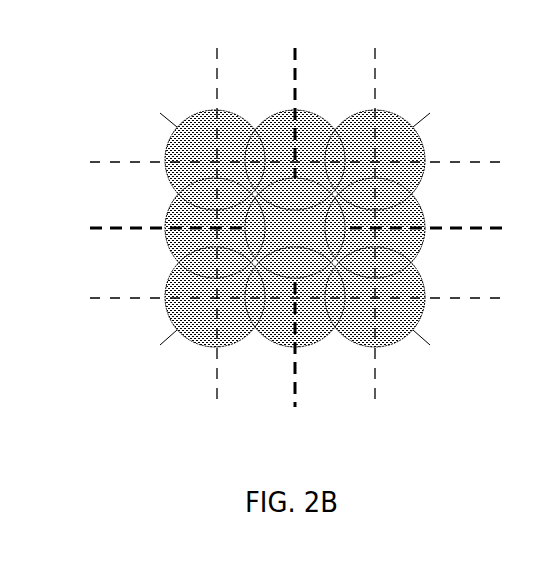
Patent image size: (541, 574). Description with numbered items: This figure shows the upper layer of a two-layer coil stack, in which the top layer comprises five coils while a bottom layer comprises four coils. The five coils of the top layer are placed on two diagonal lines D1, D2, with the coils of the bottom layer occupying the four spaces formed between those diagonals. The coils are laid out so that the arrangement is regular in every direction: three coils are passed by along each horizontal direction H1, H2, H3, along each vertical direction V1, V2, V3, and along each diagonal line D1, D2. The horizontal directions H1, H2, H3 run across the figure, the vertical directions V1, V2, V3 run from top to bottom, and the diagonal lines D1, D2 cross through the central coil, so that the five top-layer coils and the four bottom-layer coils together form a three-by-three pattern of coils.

The horizontal direction H1 is at (271, 161).
The horizontal direction H2 is at (271, 228).
The horizontal direction H3 is at (271, 298).
The vertical direction V1 is at (222, 210).
The vertical direction V2 is at (295, 210).
The vertical direction V3 is at (375, 210).
The diagonal line D1 is at (280, 214).
The diagonal line D2 is at (311, 216).